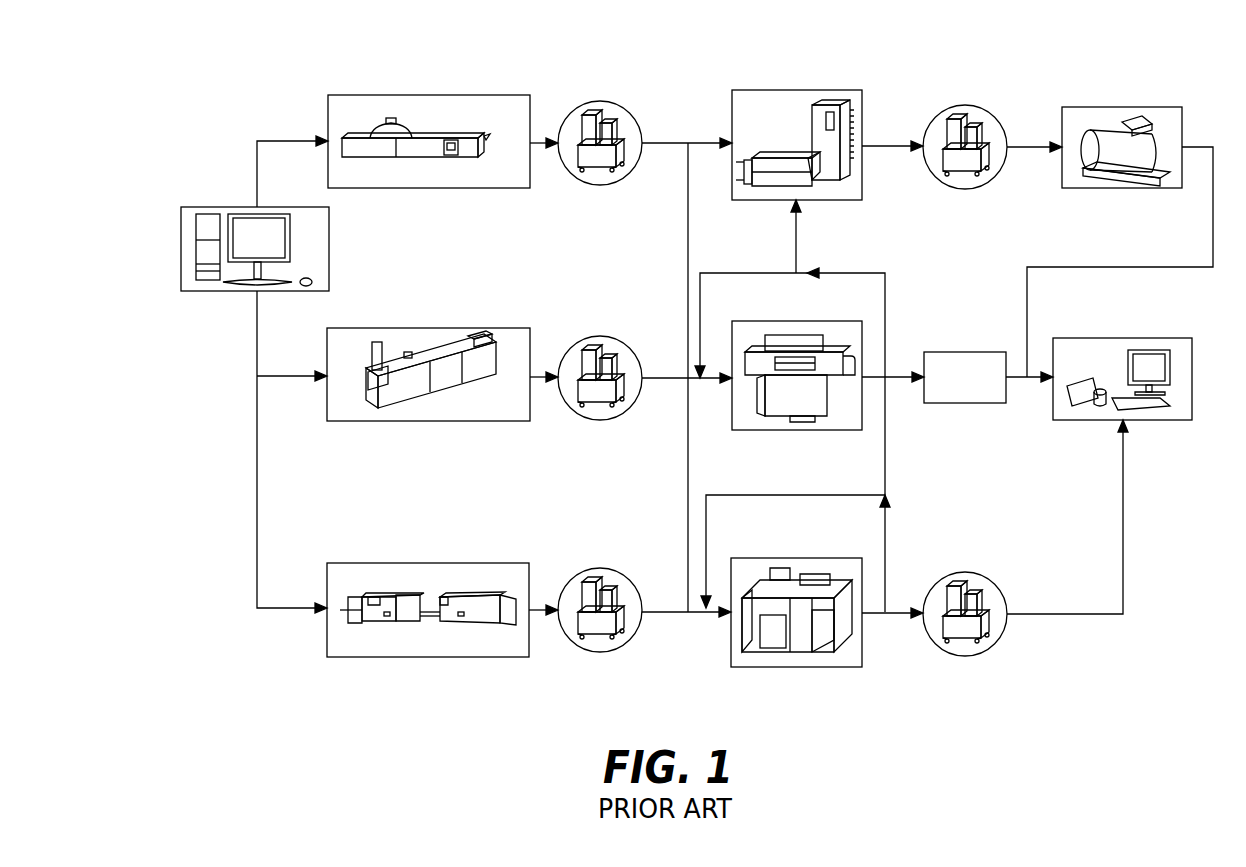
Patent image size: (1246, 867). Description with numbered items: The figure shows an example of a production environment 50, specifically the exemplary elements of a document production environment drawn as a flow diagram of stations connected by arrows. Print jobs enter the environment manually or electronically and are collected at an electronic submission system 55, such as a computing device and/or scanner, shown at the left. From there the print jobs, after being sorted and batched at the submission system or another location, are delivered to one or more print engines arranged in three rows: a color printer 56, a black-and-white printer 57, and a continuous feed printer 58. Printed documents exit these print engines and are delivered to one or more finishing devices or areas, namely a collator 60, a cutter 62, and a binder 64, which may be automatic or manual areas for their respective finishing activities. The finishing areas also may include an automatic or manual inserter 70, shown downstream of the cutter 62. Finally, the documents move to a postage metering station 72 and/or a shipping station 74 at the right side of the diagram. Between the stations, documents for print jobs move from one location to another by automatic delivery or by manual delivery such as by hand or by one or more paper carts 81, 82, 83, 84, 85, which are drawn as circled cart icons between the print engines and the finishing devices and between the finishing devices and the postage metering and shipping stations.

The production environment 50 is at (283, 80).
The electronic submission system 55 is at (212, 293).
The color printer 56 is at (447, 190).
The black-and-white printer 57 is at (447, 423).
The continuous feed printer 58 is at (447, 659).
The collator 60 is at (806, 202).
The cutter 62 is at (806, 432).
The binder 64 is at (806, 668).
The inserter 70 is at (964, 405).
The postage metering station 72 is at (1117, 190).
The shipping station 74 is at (1148, 422).
The paper cart 81 is at (600, 185).
The paper cart 82 is at (600, 420).
The paper cart 83 is at (598, 652).
The paper cart 84 is at (965, 189).
The paper cart 85 is at (965, 656).